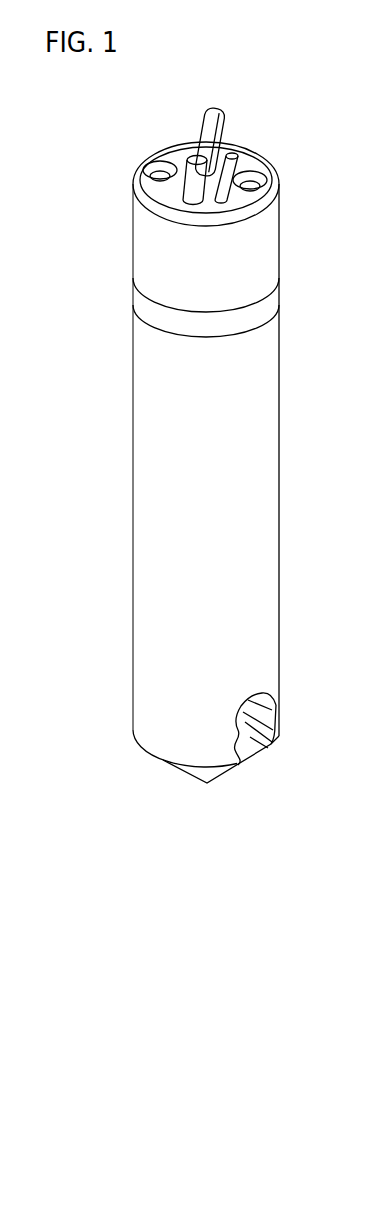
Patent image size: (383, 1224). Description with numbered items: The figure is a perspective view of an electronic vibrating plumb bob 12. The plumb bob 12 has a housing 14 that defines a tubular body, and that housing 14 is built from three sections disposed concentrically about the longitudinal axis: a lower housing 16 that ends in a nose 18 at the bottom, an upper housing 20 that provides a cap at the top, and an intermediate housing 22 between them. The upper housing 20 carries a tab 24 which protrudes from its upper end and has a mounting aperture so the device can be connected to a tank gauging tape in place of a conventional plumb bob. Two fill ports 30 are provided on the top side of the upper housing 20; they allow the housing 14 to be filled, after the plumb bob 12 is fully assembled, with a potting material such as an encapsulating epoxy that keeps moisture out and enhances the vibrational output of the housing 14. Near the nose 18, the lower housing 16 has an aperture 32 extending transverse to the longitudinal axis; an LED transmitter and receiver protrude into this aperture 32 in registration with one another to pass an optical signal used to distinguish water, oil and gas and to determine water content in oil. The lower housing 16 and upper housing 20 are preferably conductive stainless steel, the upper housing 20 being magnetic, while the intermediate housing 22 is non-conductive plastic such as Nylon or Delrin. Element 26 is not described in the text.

The electronic vibrating plumb bob 12 is at (142, 140).
The housing 14 is at (147, 438).
The lower housing 16 is at (259, 582).
The nose 18 is at (185, 768).
The upper housing 20 is at (268, 240).
The intermediate housing 22 is at (270, 298).
The tab 24 is at (221, 125).
The pin 26 is at (229, 144).
The fill ports 30 is at (153, 167).
The aperture 32 is at (274, 718).